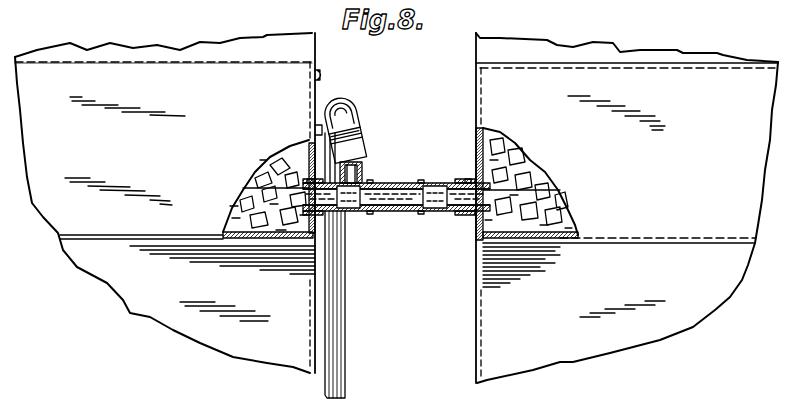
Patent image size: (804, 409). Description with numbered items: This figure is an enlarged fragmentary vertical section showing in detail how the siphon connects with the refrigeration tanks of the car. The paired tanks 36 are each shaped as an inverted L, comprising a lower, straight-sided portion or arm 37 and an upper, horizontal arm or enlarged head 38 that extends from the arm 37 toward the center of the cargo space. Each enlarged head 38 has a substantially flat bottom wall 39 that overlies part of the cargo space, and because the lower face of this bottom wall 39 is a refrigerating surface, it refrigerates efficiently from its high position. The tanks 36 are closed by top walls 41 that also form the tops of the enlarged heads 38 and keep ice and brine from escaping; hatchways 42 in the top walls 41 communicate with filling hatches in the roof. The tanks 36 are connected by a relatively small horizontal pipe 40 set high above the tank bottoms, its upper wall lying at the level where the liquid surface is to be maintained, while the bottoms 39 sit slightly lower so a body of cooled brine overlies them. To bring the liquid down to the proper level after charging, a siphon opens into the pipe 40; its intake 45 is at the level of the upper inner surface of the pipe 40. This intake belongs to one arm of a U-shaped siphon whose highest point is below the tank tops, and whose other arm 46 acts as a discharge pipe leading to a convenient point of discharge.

The tank 36 is at (258, 352).
The lower straight-sided portion or arm 37 is at (153, 307).
The upper horizontal arm or enlarged head 38 is at (288, 98).
The flat bottom wall 39 is at (477, 250).
The horizontal pipe 40 is at (415, 183).
The top wall 41 is at (220, 62).
The hatchway 42 is at (297, 52).
The intake of the siphon arm 45 is at (360, 175).
The discharge arm of the siphon 46 is at (337, 324).